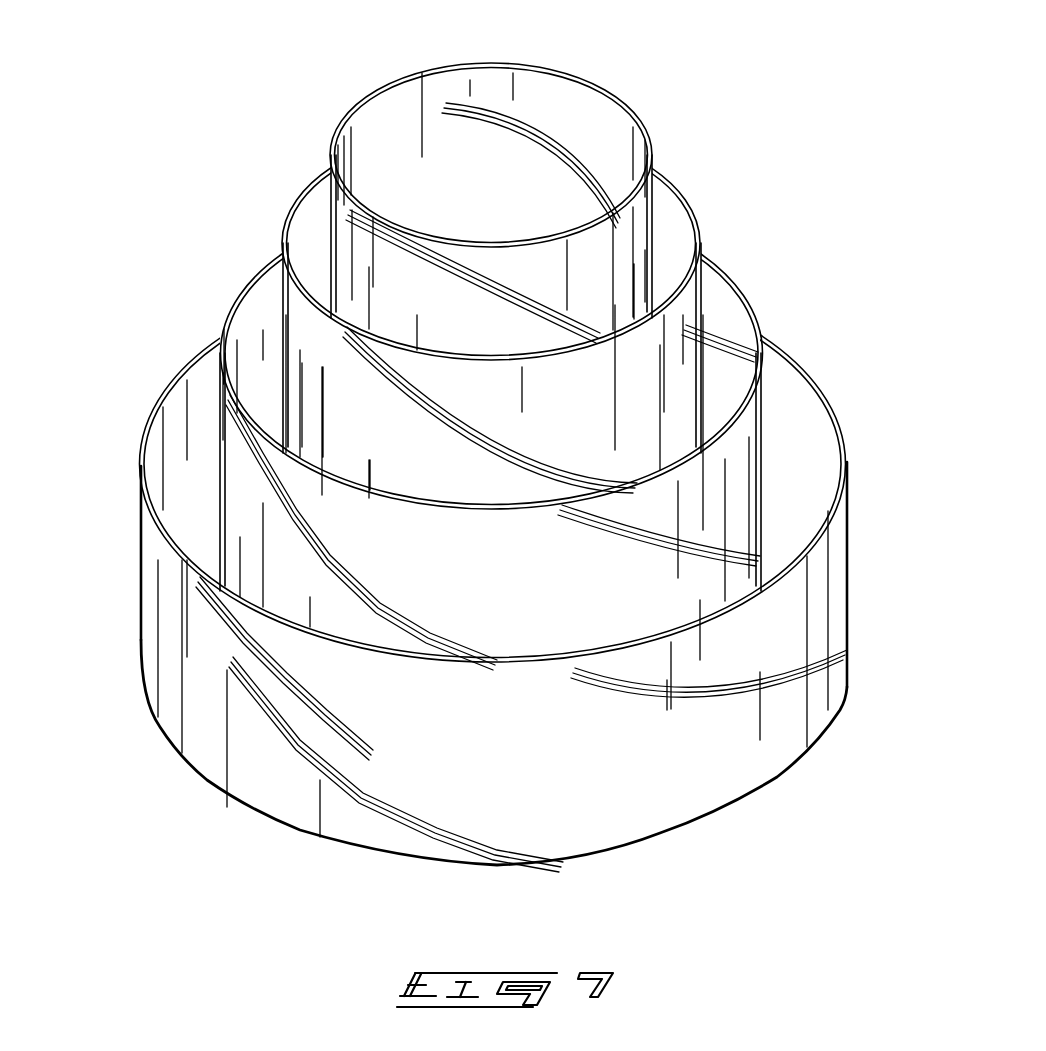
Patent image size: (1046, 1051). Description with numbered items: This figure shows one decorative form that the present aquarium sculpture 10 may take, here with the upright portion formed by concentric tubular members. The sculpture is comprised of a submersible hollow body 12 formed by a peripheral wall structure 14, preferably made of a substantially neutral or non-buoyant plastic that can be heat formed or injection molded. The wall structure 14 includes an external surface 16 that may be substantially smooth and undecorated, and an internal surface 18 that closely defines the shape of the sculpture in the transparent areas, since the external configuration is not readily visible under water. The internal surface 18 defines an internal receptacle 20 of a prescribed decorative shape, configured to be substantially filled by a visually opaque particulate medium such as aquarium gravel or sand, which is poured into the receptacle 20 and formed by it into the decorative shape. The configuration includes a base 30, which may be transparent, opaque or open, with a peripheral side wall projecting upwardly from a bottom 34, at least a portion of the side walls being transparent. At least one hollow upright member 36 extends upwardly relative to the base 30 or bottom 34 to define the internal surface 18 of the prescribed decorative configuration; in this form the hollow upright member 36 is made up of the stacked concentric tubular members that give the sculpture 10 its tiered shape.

The tiered cylindrical assembly 10 is at (730, 50).
The submersible hollow body 12 is at (333, 135).
The peripheral wall structure 14 is at (172, 600).
The external surface 16 is at (322, 335).
The internal surface 18 is at (615, 135).
The internal receptacle 20 is at (400, 118).
The base 30 is at (249, 806).
The bottom 34 is at (703, 792).
The hollow upright member 36 is at (702, 507).